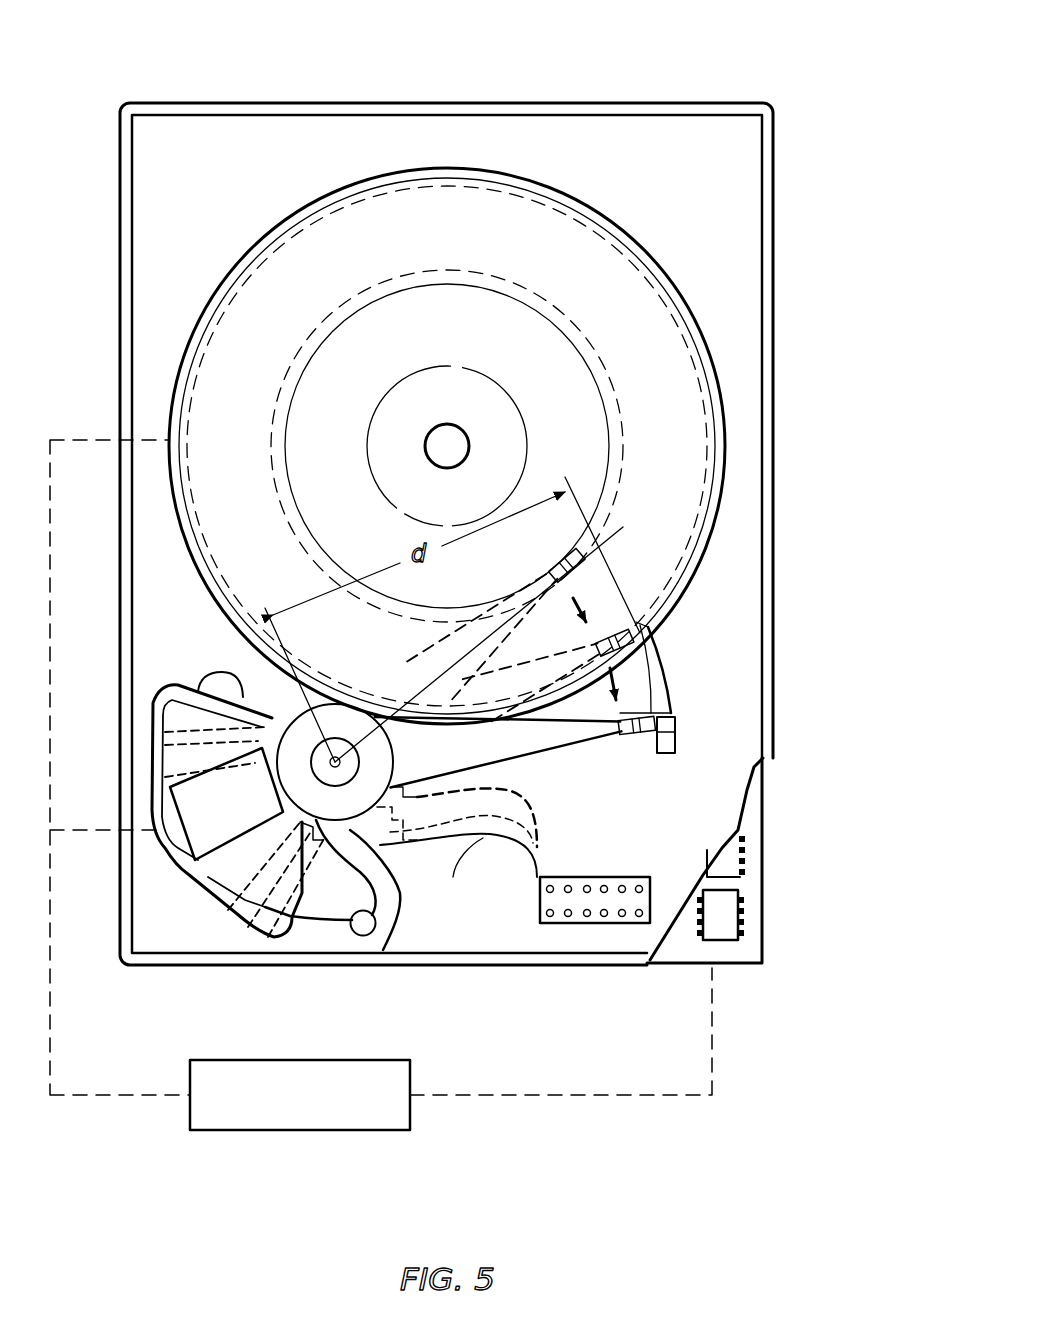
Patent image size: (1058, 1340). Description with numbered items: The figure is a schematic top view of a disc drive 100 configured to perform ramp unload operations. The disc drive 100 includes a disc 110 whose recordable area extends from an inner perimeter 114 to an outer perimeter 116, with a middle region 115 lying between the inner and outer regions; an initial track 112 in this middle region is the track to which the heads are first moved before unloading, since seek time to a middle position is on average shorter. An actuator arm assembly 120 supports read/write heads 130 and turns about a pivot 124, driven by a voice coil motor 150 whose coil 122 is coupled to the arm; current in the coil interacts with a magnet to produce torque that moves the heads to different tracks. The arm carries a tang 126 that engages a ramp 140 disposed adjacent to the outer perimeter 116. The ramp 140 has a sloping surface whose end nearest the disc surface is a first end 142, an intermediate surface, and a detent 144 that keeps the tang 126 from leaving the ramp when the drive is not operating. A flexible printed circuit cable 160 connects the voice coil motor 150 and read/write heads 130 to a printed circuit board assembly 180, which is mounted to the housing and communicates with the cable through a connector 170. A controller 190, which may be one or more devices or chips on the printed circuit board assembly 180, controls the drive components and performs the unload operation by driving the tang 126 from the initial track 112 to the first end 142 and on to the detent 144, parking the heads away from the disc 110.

The disc drive 100 is at (172, 66).
The disc 110 is at (655, 322).
The initial track 112 is at (620, 398).
The inner perimeter 114 is at (385, 392).
The middle region 115 is at (293, 380).
The outer perimeter 116 is at (197, 340).
The actuator arm assembly 120 is at (560, 758).
The coil 122 is at (228, 860).
The pivot 124 is at (383, 950).
The tang 126 is at (640, 720).
The read/write heads 130 is at (655, 737).
The ramp 140 is at (650, 668).
The first end 142 is at (658, 635).
The detent 144 is at (684, 747).
The voice coil motor 150 is at (181, 903).
The flexible printed circuit cable 160 is at (483, 838).
The connector 170 is at (598, 925).
The printed circuit board assembly 180 is at (688, 952).
The controller 190 is at (727, 863).